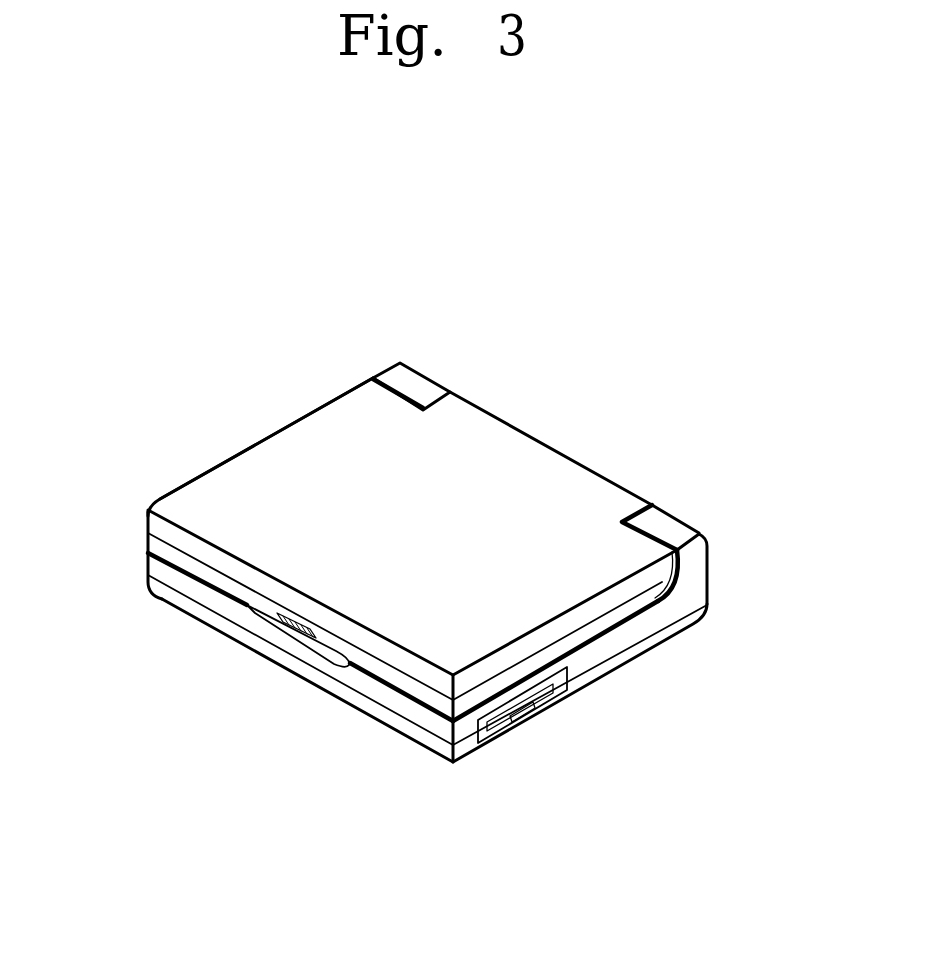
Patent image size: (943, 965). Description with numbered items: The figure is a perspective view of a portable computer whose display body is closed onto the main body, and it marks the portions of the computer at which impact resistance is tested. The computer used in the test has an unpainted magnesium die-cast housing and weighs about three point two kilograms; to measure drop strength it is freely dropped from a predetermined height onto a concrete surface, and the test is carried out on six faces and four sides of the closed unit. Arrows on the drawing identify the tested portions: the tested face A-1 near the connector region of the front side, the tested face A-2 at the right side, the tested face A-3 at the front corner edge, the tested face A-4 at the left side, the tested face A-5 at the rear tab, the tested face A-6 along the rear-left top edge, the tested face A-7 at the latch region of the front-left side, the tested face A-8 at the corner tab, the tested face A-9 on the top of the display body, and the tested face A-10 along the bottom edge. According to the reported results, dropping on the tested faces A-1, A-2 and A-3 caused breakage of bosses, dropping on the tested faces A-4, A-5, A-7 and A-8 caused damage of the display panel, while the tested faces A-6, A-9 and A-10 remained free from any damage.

The tested face A-1 is at (587, 677).
The tested face A-2 is at (710, 580).
The tested face A-3 is at (453, 766).
The tested face A-4 is at (147, 553).
The tested face A-5 is at (401, 362).
The tested face A-6 is at (210, 467).
The tested face A-7 is at (291, 657).
The tested face A-8 is at (605, 477).
The tested face A-9 is at (412, 532).
The tested face A-10 is at (368, 720).